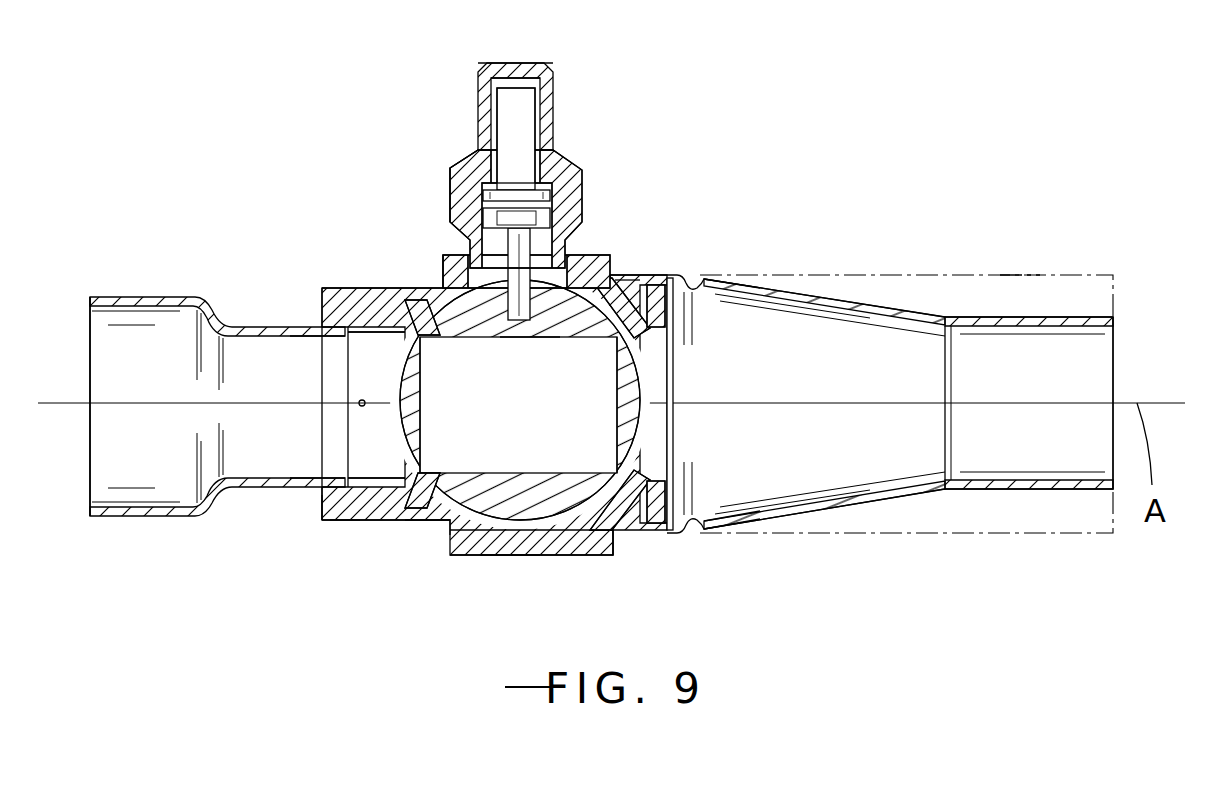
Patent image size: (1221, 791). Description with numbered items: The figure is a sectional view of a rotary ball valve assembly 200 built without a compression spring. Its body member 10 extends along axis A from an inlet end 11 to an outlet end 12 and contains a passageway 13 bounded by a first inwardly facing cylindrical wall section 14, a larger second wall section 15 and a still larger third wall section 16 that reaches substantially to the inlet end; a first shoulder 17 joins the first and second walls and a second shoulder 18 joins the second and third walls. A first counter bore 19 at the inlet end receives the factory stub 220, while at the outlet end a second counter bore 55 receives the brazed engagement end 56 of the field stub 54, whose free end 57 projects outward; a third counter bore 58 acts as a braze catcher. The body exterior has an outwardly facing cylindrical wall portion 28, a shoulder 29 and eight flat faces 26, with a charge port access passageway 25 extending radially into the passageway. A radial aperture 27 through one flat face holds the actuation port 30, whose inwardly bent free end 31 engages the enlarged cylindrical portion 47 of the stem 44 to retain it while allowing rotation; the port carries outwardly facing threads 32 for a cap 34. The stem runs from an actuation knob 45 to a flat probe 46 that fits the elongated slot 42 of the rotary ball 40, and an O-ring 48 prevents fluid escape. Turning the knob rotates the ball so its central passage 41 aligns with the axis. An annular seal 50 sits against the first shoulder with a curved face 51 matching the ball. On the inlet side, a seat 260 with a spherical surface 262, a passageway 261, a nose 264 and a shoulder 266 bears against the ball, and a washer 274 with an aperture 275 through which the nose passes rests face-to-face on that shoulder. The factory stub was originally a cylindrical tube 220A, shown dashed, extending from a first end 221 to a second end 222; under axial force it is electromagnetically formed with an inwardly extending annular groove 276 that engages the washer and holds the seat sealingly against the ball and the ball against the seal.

The body member 10 is at (378, 285).
The inlet end 11 is at (637, 272).
The outlet end 12 is at (325, 305).
The passageway 13 is at (368, 515).
The first inwardly facing cylindrical wall section 14 is at (371, 333).
The second inwardly facing cylindrical wall section 15 is at (418, 522).
The third inwardly facing cylindrical wall section 16 is at (472, 558).
The first shoulder 17 is at (378, 476).
The second shoulder 18 is at (445, 290).
The first counter bore 19 is at (610, 545).
The charge port access passageway 25 is at (358, 402).
The flat faces 26 is at (500, 558).
The radial aperture 27 is at (585, 278).
The outwardly facing cylindrical wall portion 28 is at (338, 528).
The shoulder 29 is at (440, 545).
The actuation port 30 is at (572, 195).
The free end 31 is at (476, 170).
The outwardly facing threads 32 is at (481, 212).
The cap 34 is at (480, 68).
The rotary ball 40 is at (628, 433).
The central passage 41 is at (494, 460).
The elongated slot 42 is at (448, 300).
The stem 44 is at (517, 76).
The actuation knob 45 is at (527, 112).
The flat probe 46 is at (517, 322).
The enlarged cylindrical portion 47 is at (513, 195).
The O-ring 48 is at (483, 228).
The annular seal 50 is at (432, 290).
The curved face 51 is at (437, 340).
The field stub 54 is at (128, 297).
The second counter bore 55 is at (322, 497).
The engagement end 56 is at (330, 347).
The free end 57 is at (90, 462).
The third counter bore 58 is at (345, 450).
The rotary ball valve assembly 200 is at (440, 118).
The factory stub 220 is at (815, 290).
The cylindrical tube 220A is at (1018, 272).
The first end 221 is at (1113, 352).
The second end 222 is at (556, 337).
The seat 260 is at (638, 352).
The passageway 261 is at (582, 522).
The spherical surface 262 is at (562, 295).
The nose 264 is at (668, 340).
The shoulder 266 is at (622, 290).
The washer 274 is at (700, 274).
The aperture 275 is at (698, 466).
The inwardly extending annular groove 276 is at (702, 535).